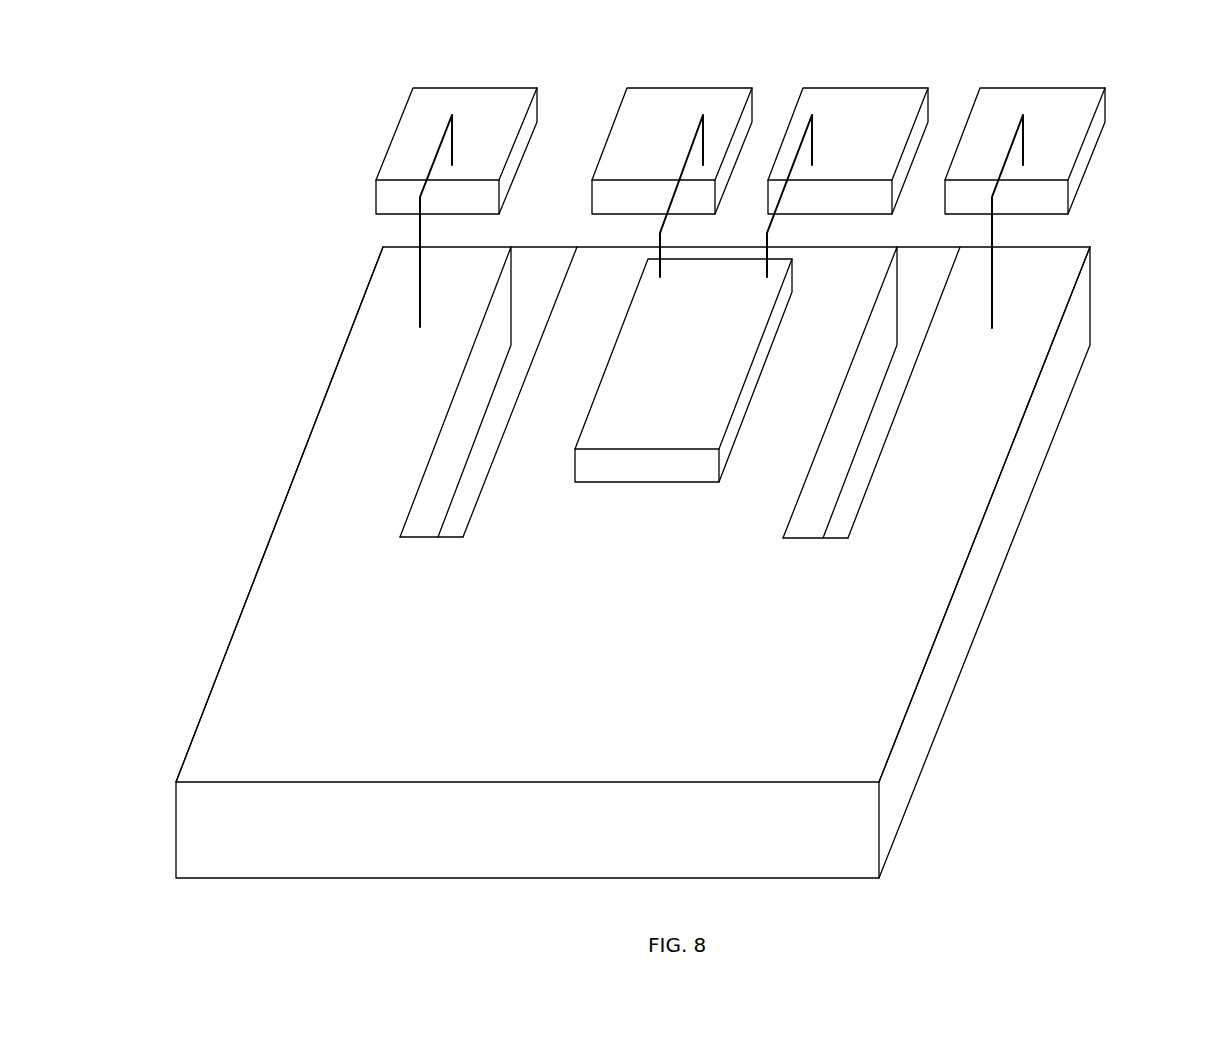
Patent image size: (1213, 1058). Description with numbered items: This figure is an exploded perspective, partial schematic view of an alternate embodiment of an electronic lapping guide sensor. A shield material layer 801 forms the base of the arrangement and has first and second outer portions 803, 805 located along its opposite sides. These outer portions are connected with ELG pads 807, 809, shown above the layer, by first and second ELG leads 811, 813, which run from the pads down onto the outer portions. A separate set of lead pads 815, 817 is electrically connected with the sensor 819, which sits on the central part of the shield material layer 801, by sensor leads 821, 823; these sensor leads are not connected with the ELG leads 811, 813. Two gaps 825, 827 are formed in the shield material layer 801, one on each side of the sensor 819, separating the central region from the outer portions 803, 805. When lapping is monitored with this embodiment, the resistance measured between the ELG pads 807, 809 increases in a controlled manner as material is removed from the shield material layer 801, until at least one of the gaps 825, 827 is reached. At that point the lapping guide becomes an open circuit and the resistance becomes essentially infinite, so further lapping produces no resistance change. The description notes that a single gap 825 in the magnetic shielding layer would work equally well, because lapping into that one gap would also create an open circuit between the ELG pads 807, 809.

The shield material layer 801 is at (1020, 462).
The first outer portion 803 is at (383, 295).
The second outer portion 805 is at (1060, 260).
The ELG pad 807 is at (463, 108).
The ELG pad 809 is at (1033, 100).
The first ELG lead 811 is at (421, 222).
The second ELG lead 813 is at (993, 222).
The lead pad 815 is at (688, 108).
The lead pad 817 is at (857, 108).
The sensor 819 is at (648, 433).
The sensor lead 821 is at (661, 222).
The sensor lead 823 is at (768, 222).
The gap 825 is at (533, 263).
The gap 827 is at (920, 262).